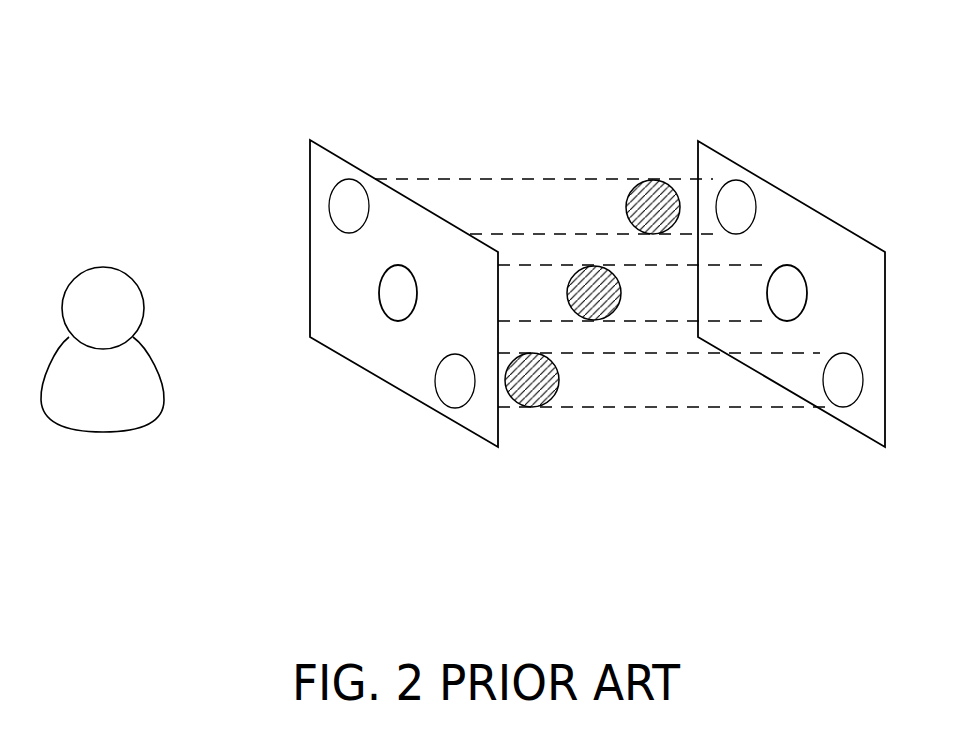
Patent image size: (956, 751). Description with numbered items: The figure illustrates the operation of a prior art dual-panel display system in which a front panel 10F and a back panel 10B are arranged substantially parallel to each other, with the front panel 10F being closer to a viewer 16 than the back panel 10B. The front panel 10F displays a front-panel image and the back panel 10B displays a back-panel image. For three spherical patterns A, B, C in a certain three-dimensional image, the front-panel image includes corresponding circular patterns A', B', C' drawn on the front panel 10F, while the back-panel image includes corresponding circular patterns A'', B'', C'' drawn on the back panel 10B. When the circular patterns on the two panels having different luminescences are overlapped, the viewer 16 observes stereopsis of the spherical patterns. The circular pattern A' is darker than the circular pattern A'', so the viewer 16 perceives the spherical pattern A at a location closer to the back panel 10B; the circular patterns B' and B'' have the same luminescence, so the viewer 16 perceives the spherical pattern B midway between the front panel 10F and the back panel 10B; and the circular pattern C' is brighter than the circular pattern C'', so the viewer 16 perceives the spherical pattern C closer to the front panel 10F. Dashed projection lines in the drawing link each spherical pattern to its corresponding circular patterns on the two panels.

The front panel 10F is at (338, 157).
The back panel 10B is at (725, 157).
The viewer 16 is at (163, 390).
The spherical pattern A is at (617, 207).
The spherical pattern B is at (624, 293).
The spherical pattern C is at (562, 380).
The circular pattern A' is at (349, 206).
The circular pattern B' is at (398, 293).
The circular pattern C' is at (455, 381).
The circular pattern A'' is at (736, 207).
The circular pattern B'' is at (787, 293).
The circular pattern C'' is at (843, 380).